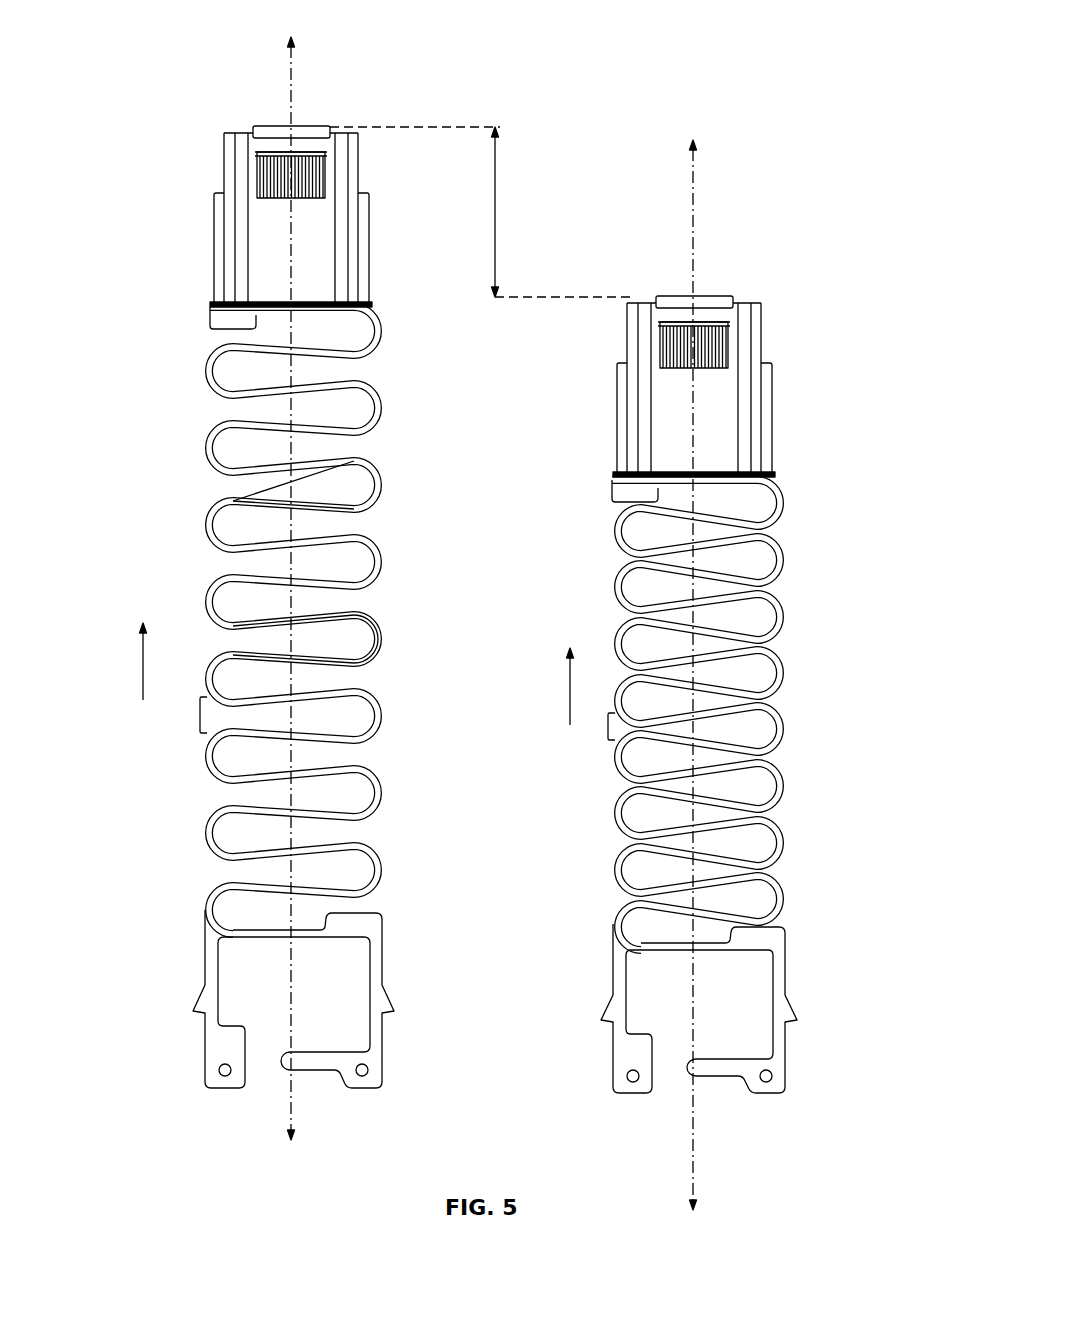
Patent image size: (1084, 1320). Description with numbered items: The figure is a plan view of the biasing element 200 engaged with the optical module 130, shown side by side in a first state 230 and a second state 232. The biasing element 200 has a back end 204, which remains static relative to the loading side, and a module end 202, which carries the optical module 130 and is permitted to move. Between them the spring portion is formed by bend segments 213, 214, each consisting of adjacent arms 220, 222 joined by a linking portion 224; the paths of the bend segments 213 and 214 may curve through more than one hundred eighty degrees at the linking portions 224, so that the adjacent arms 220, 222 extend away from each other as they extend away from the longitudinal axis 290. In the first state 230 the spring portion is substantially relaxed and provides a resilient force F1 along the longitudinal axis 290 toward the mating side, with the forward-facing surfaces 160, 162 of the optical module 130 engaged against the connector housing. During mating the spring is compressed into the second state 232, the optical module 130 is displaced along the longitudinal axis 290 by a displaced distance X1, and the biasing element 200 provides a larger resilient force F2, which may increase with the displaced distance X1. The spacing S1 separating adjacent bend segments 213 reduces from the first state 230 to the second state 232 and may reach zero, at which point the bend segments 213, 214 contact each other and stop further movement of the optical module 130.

The optical module 130 is at (225, 153).
The forward-facing surface 160 is at (218, 191).
The forward-facing surface 162 is at (367, 191).
The biasing element 200 is at (172, 386).
The module end 202 is at (378, 301).
The back end 204 is at (212, 1126).
The bend segment 213 is at (165, 543).
The bend segment 214 is at (432, 554).
The arm 220 is at (364, 666).
The arm 222 is at (350, 612).
The linking portion 224 is at (378, 642).
The first state 230 is at (373, 94).
The second state 232 is at (823, 250).
The longitudinal axis 290 is at (293, 77).
The resilient force F1 is at (143, 660).
The resilient force F2 is at (570, 685).
The spacing S1 is at (200, 715).
The displaced distance X1 is at (498, 212).